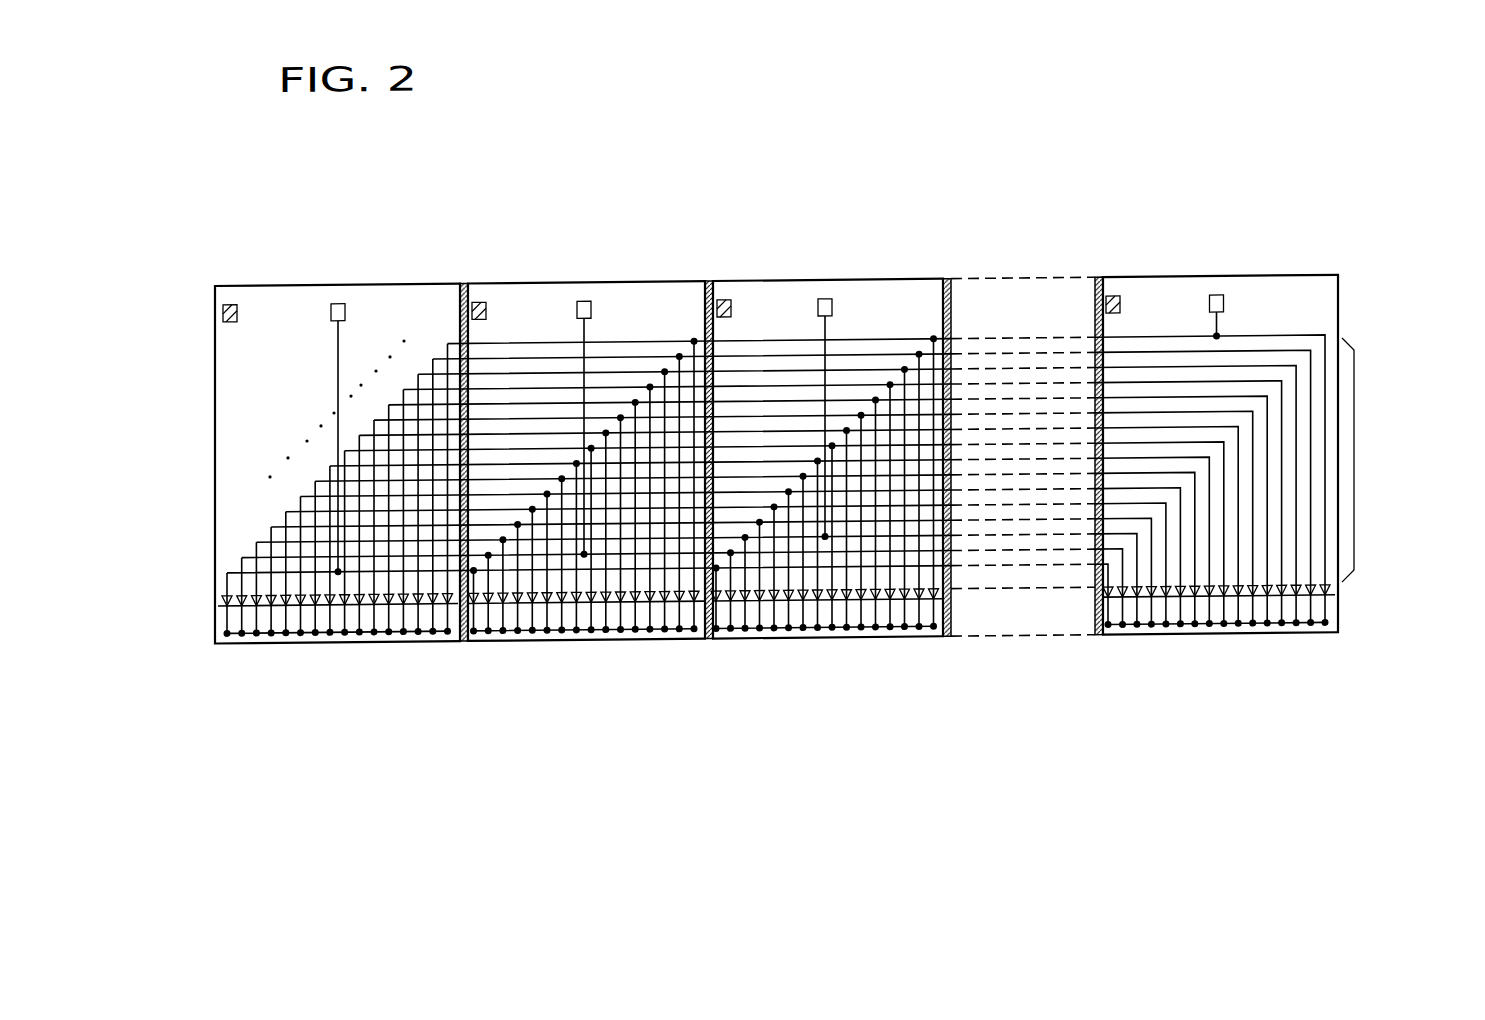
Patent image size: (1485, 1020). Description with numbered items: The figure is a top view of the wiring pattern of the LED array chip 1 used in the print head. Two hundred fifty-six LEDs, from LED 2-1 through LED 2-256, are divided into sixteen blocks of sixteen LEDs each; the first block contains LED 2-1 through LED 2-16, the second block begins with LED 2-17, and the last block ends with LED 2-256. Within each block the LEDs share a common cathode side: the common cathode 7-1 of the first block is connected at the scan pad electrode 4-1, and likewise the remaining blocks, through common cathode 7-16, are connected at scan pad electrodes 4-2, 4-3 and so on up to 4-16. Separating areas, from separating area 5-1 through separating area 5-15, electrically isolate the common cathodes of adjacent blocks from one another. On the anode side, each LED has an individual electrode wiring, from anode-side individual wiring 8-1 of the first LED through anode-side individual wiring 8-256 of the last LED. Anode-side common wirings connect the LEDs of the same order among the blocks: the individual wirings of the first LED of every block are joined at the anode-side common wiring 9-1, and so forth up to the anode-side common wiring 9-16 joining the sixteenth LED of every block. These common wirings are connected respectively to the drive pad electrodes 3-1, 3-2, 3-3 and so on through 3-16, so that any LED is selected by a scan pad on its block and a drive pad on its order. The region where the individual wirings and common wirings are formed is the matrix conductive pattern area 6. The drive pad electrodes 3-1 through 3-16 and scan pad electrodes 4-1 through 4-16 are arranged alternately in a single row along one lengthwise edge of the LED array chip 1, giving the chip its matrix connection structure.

The LED array chip 1 is at (717, 746).
The LED 2-1 is at (221, 644).
The LED 2-16 is at (447, 608).
The LED 2-17 is at (480, 611).
The LED 2-256 is at (1310, 644).
The drive pad electrode 3-1 is at (338, 305).
The drive pad electrode 3-2 is at (584, 305).
The drive pad electrode 3-3 is at (825, 305).
The drive pad electrode 3-16 is at (1216, 305).
The scan pad electrode 4-1 is at (233, 286).
The scan pad electrode 4-2 is at (479, 305).
The scan pad electrode 4-3 is at (724, 305).
The scan pad electrode 4-16 is at (1113, 305).
The separating area 5-1 is at (461, 644).
The separating area 5-15 is at (1095, 644).
The matrix conductive pattern area 6 is at (1357, 460).
The common cathode 7-1 is at (324, 660).
The common cathode 7-16 is at (1203, 644).
The anode-side individual electrode wiring 8-1 is at (228, 584).
The anode-side individual electrode wiring 8-256 is at (1326, 389).
The anode-side common wiring 9-1 is at (229, 572).
The anode-side common wiring 9-16 is at (486, 346).